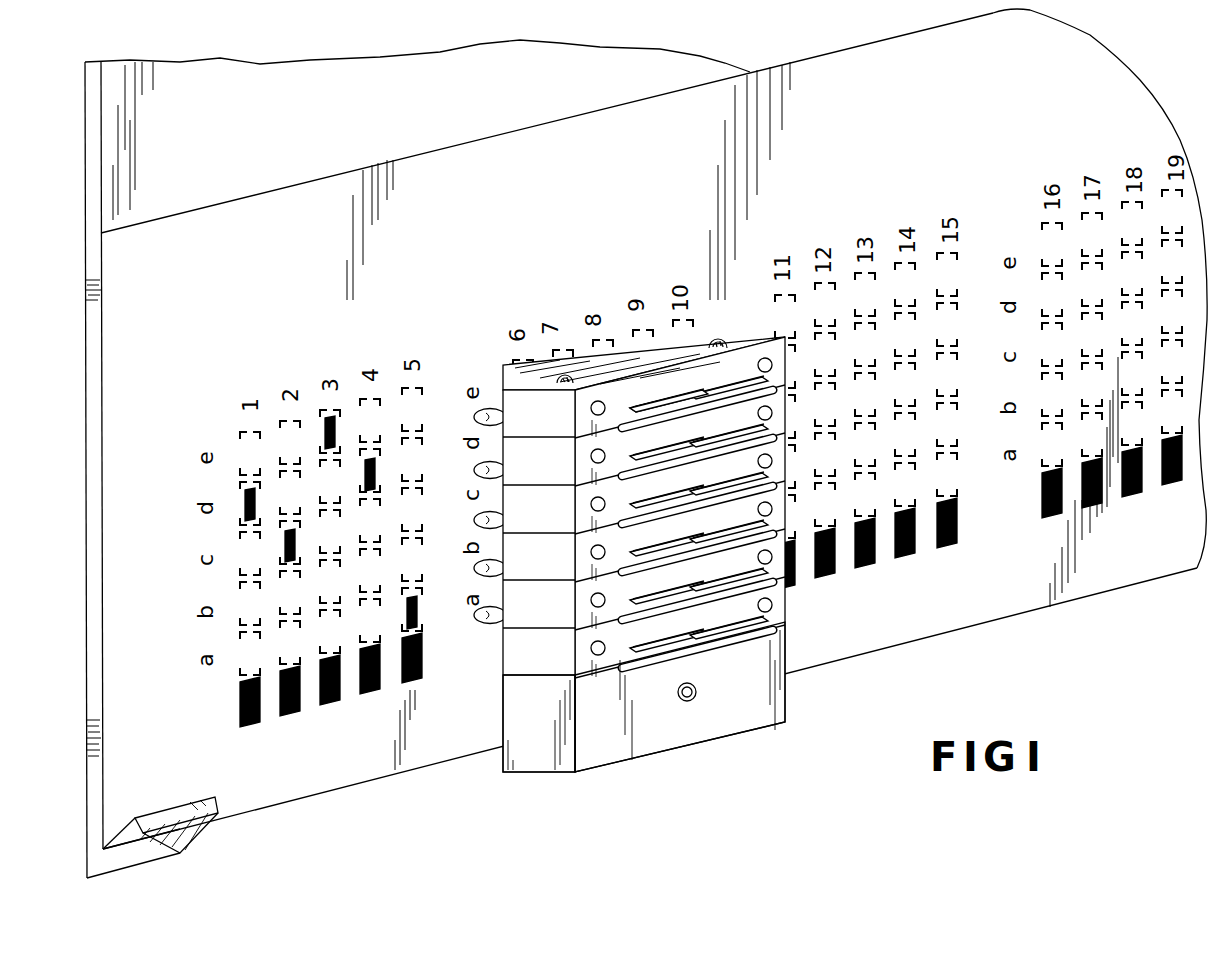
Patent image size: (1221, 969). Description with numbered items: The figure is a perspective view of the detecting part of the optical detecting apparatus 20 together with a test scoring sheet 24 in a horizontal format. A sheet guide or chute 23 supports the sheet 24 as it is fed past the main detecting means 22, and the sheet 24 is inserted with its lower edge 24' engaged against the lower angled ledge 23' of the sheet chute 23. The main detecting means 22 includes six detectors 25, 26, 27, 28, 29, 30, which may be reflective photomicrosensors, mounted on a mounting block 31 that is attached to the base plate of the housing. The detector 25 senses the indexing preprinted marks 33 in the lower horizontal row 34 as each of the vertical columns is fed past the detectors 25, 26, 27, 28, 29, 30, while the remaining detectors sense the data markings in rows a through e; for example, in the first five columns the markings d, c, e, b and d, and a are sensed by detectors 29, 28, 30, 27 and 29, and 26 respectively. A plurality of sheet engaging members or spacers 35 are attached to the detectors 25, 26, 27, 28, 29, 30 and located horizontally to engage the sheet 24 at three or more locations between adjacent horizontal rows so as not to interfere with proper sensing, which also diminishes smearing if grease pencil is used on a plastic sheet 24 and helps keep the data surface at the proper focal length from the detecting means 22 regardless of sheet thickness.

The optical detecting apparatus 20 is at (662, 592).
The main detecting means 22 is at (780, 600).
The sheet chute 23 is at (646, 443).
The lower angled ledge 23' is at (152, 826).
The sheet 24 is at (641, 560).
The lower edge 24' is at (216, 829).
The detector 25 is at (524, 665).
The detector 26 is at (524, 617).
The detector 27 is at (524, 569).
The detector 28 is at (524, 521).
The detector 29 is at (524, 473).
The detector 30 is at (524, 425).
The mounting block 31 is at (550, 729).
The indexing preprinted marks 33 is at (331, 696).
The lower horizontal row 34 is at (228, 708).
The spacers 35 is at (475, 620).